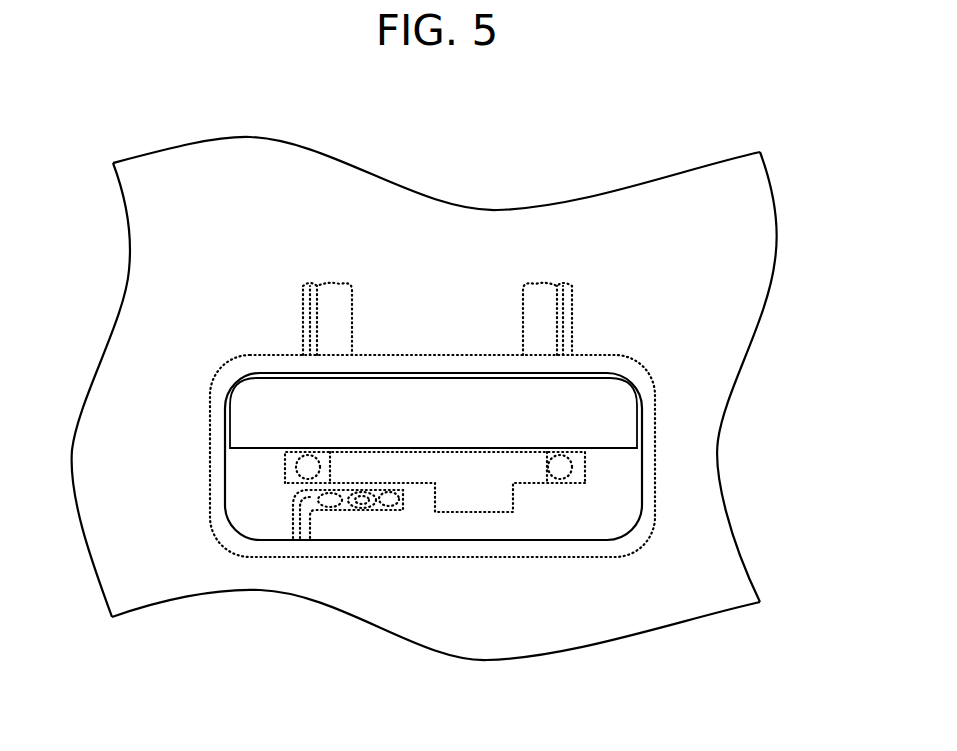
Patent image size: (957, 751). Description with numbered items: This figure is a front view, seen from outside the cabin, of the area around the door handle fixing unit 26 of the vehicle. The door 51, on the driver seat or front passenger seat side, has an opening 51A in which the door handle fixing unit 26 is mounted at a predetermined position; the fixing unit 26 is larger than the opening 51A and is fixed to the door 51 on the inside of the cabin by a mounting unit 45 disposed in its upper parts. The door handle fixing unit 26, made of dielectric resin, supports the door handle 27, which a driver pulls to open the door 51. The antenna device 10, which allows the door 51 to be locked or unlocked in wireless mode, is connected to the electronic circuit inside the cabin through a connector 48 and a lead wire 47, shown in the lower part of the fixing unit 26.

The door 51 is at (750, 198).
The opening 51A is at (628, 532).
The mounting unit 45 is at (330, 293).
The door handle fixing unit 26 is at (613, 497).
The door handle 27 is at (618, 413).
The antenna device 10 is at (572, 465).
The connector 48 is at (422, 500).
The lead wire 47 is at (322, 505).